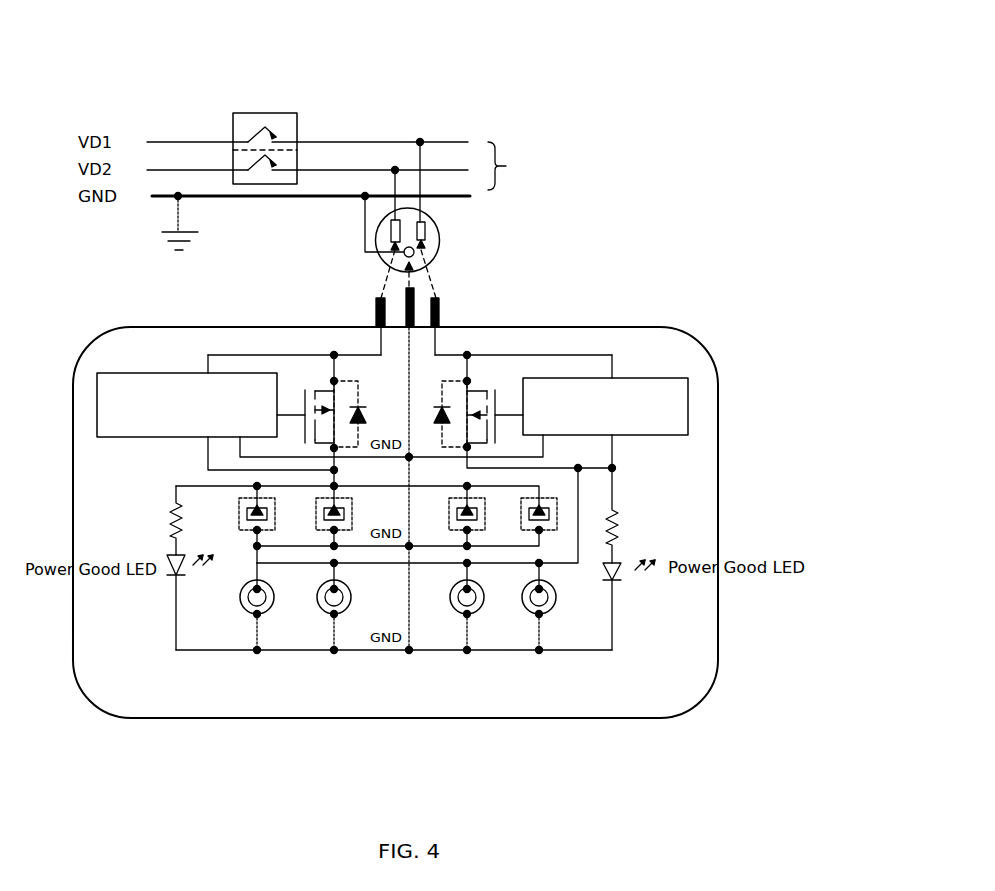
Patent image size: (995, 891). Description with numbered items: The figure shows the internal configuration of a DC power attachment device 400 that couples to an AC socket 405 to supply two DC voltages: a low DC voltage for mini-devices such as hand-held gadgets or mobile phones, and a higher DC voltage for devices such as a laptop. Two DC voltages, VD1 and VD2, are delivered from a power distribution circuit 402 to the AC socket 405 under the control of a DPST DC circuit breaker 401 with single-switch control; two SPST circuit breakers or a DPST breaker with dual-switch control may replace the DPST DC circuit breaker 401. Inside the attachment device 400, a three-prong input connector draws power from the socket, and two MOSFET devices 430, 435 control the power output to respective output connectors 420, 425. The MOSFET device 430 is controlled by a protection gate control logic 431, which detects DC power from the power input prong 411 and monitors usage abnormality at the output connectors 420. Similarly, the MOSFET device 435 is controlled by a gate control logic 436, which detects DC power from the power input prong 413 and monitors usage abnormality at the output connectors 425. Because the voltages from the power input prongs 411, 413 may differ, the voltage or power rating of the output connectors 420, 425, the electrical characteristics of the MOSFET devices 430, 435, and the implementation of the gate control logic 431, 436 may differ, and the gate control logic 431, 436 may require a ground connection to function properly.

The DC power attachment device 400 is at (732, 323).
The DPST DC circuit breaker 401 is at (263, 116).
The power distribution circuit 402 is at (451, 196).
The AC socket 405 is at (442, 236).
The power input prong 411 is at (376, 305).
The power input prong 413 is at (439, 301).
The output connectors 420 is at (232, 510).
The output connectors 425 is at (558, 605).
The MOSFET device 430 is at (323, 377).
The protection gate control logic 431 is at (201, 405).
The MOSFET device 435 is at (485, 380).
The gate control logic 436 is at (591, 406).